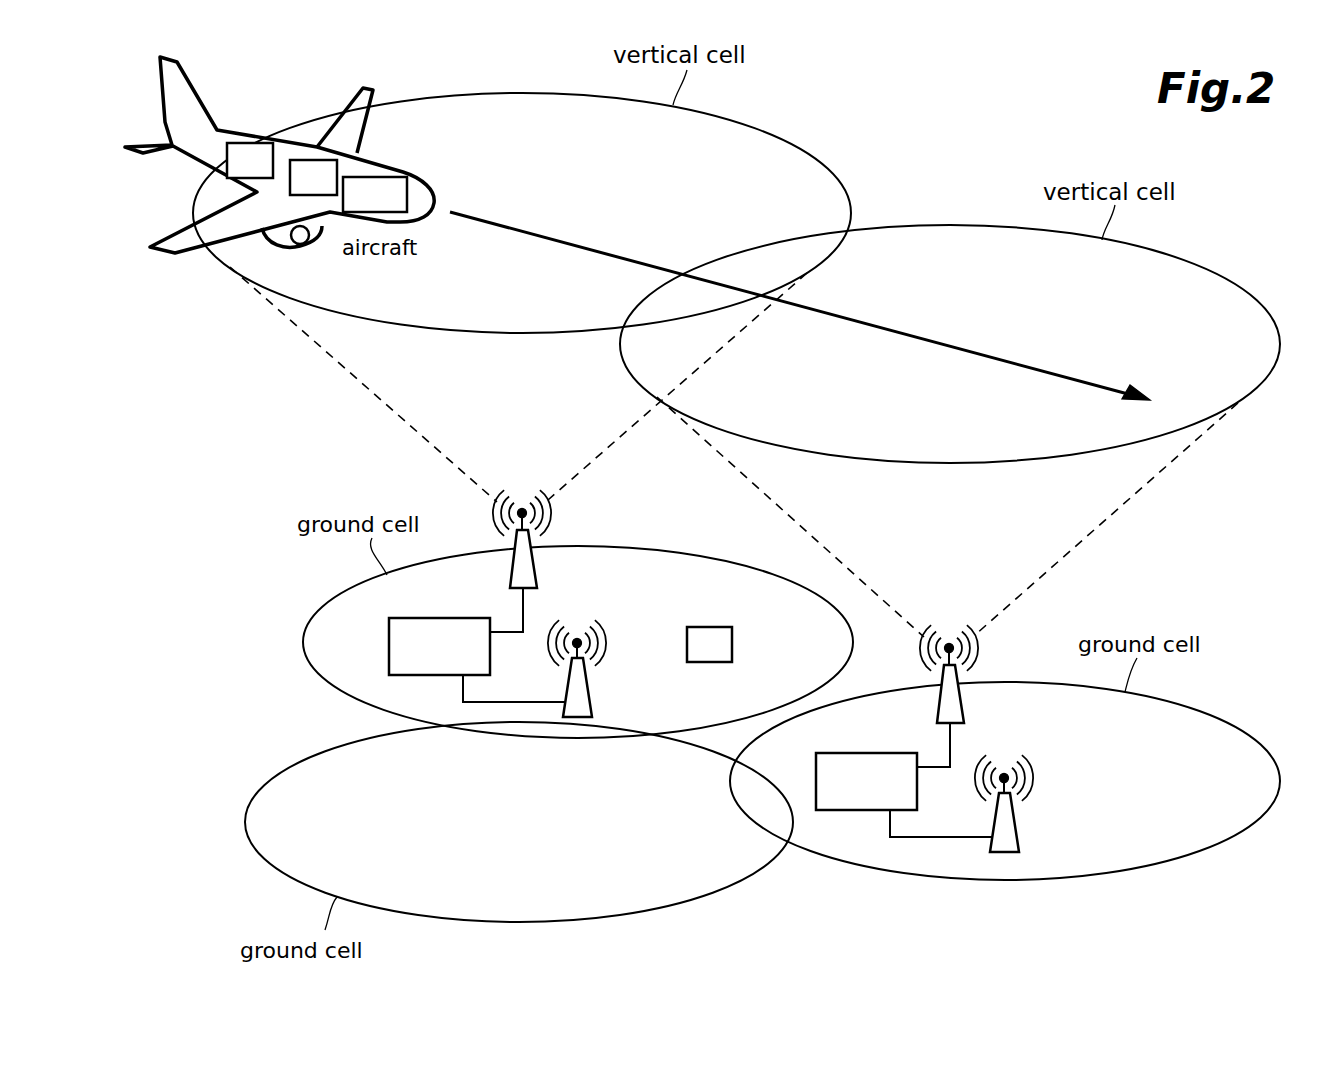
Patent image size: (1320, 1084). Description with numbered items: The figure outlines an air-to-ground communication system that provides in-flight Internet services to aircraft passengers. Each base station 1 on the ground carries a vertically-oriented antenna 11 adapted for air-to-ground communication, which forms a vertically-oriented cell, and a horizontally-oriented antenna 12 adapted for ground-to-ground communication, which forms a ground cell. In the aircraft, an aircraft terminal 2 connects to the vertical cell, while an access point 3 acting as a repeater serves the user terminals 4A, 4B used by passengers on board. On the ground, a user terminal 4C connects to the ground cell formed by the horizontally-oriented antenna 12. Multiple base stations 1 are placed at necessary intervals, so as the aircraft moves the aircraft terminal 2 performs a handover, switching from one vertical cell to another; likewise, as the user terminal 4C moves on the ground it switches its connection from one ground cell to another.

The base station 1 is at (452, 618).
The aircraft terminal 2 is at (387, 177).
The access point 3 is at (307, 160).
The user terminal 4A is at (244, 122).
The user terminal 4B is at (255, 143).
The user terminal 4C is at (708, 627).
The vertically-oriented antenna 11 is at (537, 573).
The horizontally-oriented antenna 12 is at (592, 700).